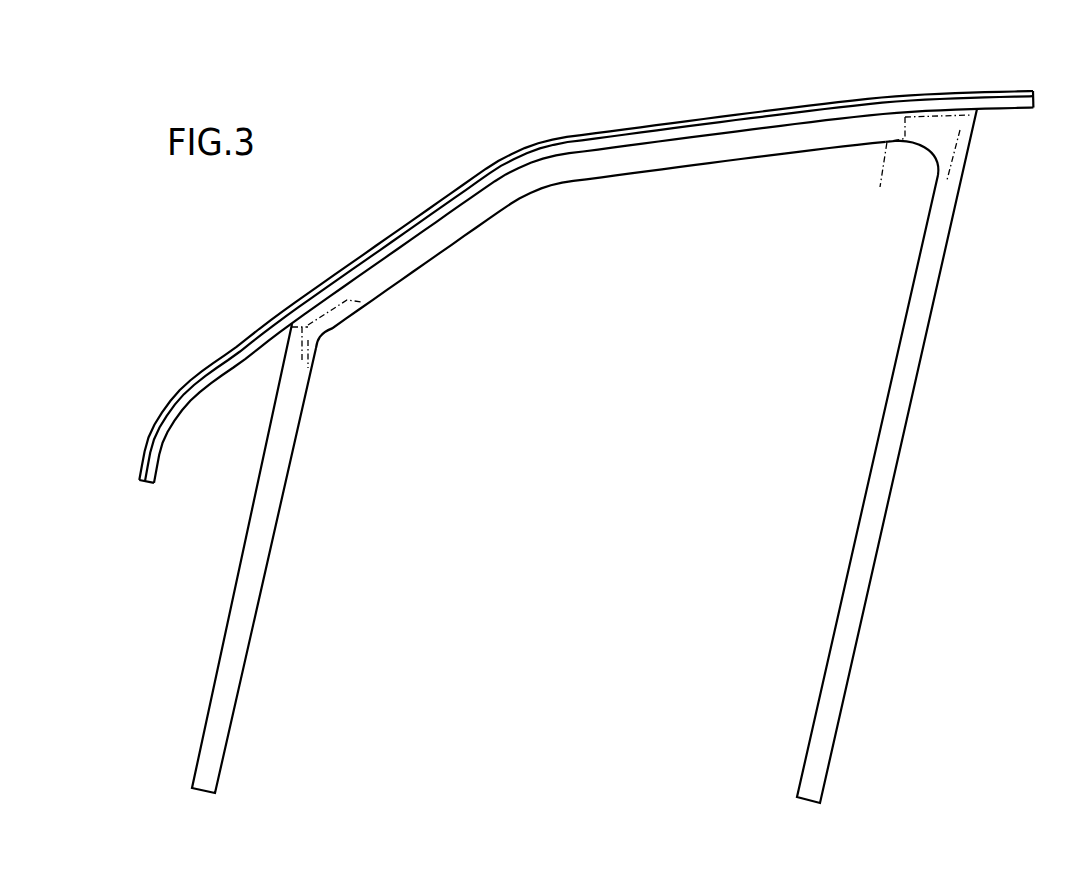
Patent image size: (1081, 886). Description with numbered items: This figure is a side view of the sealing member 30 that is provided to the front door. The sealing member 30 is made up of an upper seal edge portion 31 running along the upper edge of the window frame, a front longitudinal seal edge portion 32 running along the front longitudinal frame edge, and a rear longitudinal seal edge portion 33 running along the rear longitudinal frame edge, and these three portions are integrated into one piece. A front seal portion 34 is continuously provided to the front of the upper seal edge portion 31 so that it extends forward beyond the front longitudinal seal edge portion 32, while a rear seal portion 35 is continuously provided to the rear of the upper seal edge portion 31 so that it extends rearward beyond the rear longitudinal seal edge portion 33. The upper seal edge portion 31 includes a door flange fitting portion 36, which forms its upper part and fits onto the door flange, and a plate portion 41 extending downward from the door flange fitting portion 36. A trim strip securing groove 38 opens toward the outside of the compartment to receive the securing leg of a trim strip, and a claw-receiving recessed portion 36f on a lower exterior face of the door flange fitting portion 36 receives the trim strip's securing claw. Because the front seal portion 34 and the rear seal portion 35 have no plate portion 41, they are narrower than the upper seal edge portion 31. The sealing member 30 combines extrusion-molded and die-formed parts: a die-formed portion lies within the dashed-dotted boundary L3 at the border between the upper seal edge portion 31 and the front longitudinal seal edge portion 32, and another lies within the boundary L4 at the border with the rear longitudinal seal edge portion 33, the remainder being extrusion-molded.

The sealing member 30 is at (638, 102).
The upper seal edge portion 31 is at (752, 140).
The front longitudinal seal edge portion 32 is at (228, 663).
The rear longitudinal seal edge portion 33 is at (868, 548).
The front seal portion 34 is at (165, 407).
The rear seal portion 35 is at (1023, 90).
The door flange fitting portion 36 is at (553, 151).
The claw-receiving recessed portion 36f is at (608, 151).
The trim strip securing groove 38 is at (433, 205).
The plate portion 41 is at (527, 185).
The boundary L3 is at (342, 298).
The boundary L4 is at (919, 167).